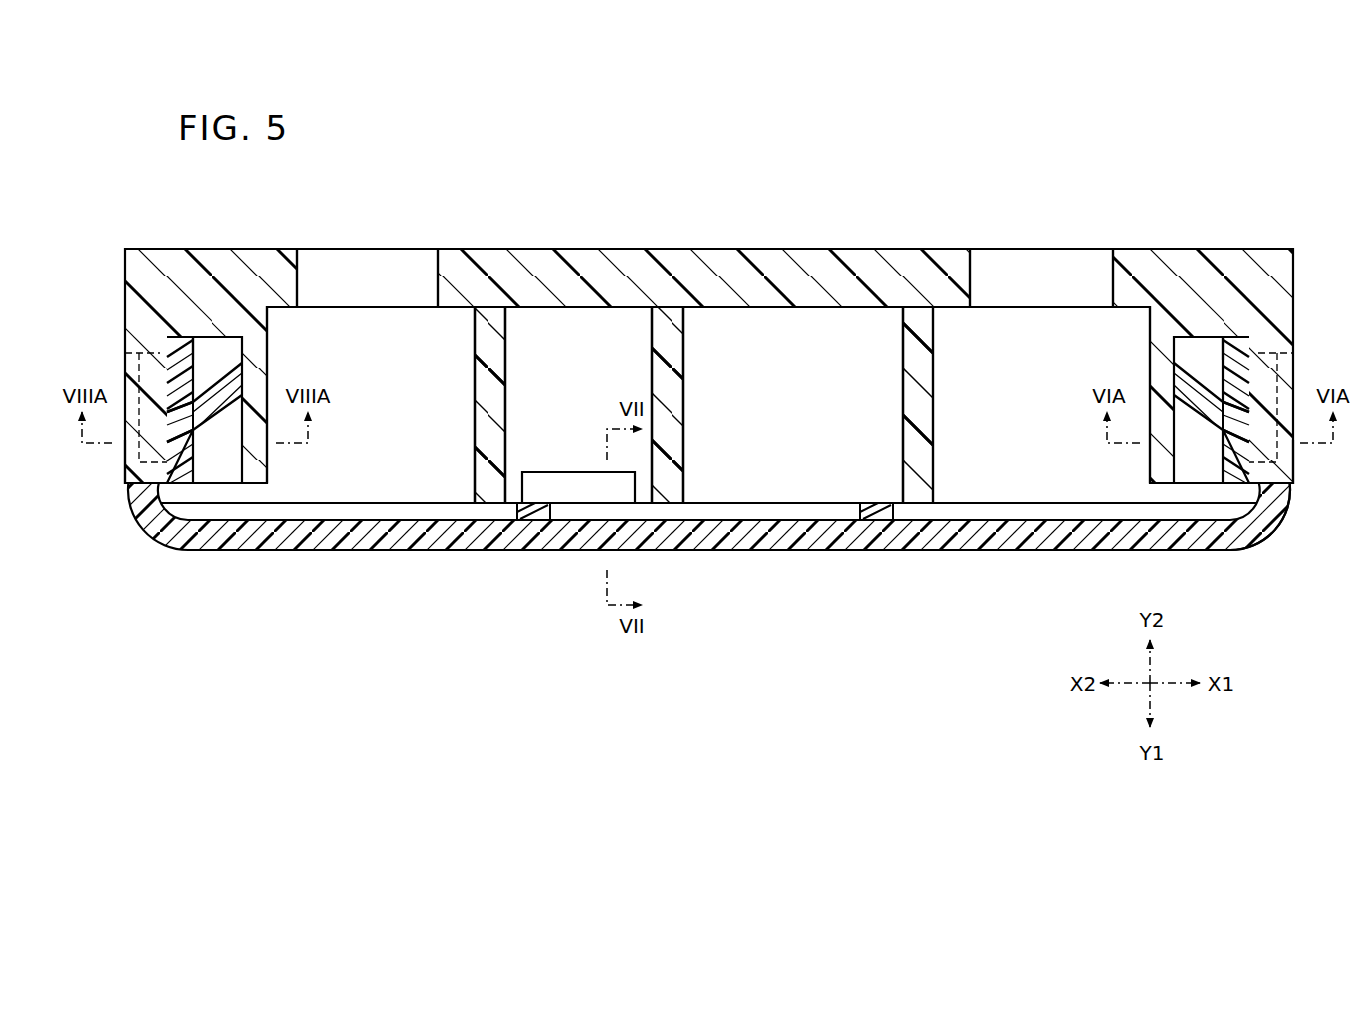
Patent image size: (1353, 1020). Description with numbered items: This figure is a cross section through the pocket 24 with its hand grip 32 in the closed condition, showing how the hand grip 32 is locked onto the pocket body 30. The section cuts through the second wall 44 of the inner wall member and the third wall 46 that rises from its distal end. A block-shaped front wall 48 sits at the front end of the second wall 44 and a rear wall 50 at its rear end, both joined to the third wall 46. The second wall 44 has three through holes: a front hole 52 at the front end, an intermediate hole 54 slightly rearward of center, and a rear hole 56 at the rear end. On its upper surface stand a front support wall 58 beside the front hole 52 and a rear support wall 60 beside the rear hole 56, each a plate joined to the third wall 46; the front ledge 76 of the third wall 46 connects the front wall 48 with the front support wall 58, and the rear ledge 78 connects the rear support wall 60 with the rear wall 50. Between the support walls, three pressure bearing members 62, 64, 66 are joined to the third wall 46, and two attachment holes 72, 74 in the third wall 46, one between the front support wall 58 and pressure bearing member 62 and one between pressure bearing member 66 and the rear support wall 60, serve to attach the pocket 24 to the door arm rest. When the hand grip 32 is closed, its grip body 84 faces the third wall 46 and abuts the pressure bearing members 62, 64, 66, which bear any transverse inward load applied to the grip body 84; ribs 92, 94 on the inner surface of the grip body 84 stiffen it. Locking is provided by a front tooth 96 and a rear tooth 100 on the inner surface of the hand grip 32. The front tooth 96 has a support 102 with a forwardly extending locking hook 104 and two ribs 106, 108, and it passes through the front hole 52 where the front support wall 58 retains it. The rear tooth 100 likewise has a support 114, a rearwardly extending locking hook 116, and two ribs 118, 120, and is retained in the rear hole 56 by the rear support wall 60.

The pocket 24 is at (297, 208).
The pocket body 30 is at (1221, 222).
The hand grip 32 is at (1273, 538).
The second wall 44 is at (577, 330).
The third wall 46 is at (765, 262).
The front wall 48 is at (1293, 478).
The rear wall 50 is at (125, 476).
The front hole 52 is at (1185, 473).
The intermediate hole 54 is at (577, 490).
The rear hole 56 is at (227, 473).
The front support wall 58 is at (1155, 472).
The rear support wall 60 is at (253, 472).
The pressure bearing member 62 is at (927, 405).
The pressure bearing member 64 is at (672, 396).
The pressure bearing member 66 is at (481, 346).
The attachment hole 72 is at (1025, 265).
The attachment hole 74 is at (392, 272).
The front ledge 76 is at (1187, 348).
The rear ledge 78 is at (213, 338).
The grip body 84 is at (1040, 545).
The rib 92 is at (878, 510).
The rib 94 is at (533, 512).
The front tooth 96 is at (1235, 473).
The rear tooth 100 is at (180, 470).
The support 102 is at (1250, 397).
The locking hook 104 is at (1277, 353).
The rib 106 is at (1172, 380).
The rib 108 is at (1237, 338).
The support 114 is at (168, 380).
The locking hook 116 is at (139, 353).
The rib 118 is at (245, 378).
The rib 120 is at (184, 337).